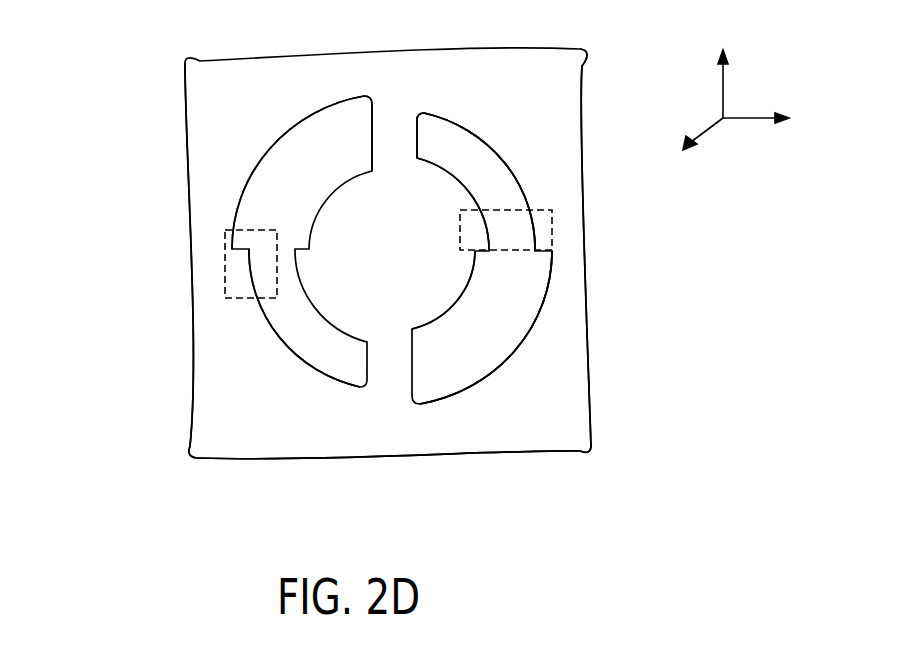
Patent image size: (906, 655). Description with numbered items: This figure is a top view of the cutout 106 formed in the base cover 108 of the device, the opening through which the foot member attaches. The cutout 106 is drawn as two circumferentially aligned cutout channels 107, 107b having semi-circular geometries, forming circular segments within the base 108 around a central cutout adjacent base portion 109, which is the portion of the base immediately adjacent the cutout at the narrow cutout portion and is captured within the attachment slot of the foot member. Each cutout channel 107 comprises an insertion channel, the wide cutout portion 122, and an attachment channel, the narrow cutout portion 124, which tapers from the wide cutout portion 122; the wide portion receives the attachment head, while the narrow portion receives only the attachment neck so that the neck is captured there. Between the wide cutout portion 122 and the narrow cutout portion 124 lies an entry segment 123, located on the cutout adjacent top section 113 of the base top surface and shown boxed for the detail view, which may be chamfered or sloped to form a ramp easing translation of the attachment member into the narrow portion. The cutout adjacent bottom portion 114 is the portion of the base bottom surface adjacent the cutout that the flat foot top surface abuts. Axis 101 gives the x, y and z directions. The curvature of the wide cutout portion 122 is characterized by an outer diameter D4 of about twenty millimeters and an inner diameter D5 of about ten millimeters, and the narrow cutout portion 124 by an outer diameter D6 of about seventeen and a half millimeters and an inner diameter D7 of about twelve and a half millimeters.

The axis 101 is at (723, 97).
The cutout 106 is at (298, 133).
The cutout channel 107 is at (351, 125).
The circumferentially aligned cutout channels 107b is at (441, 138).
The base cover 108 is at (582, 69).
The cutout adjacent base portion 109 is at (220, 68).
The cutout adjacent top section 113 is at (192, 273).
The cutout adjacent bottom portion 114 is at (408, 457).
The wide cutout portion 122 is at (319, 189).
The entry segment 123 is at (552, 228).
The narrow cutout portion 124 is at (499, 184).
The outer diameter of wide cutout portion D4 is at (533, 328).
The inner diameter of wide cutout portion D5 is at (462, 295).
The outer diameter of narrow cutout portion D6 is at (508, 174).
The inner diameter of narrow cutout portion D7 is at (452, 173).